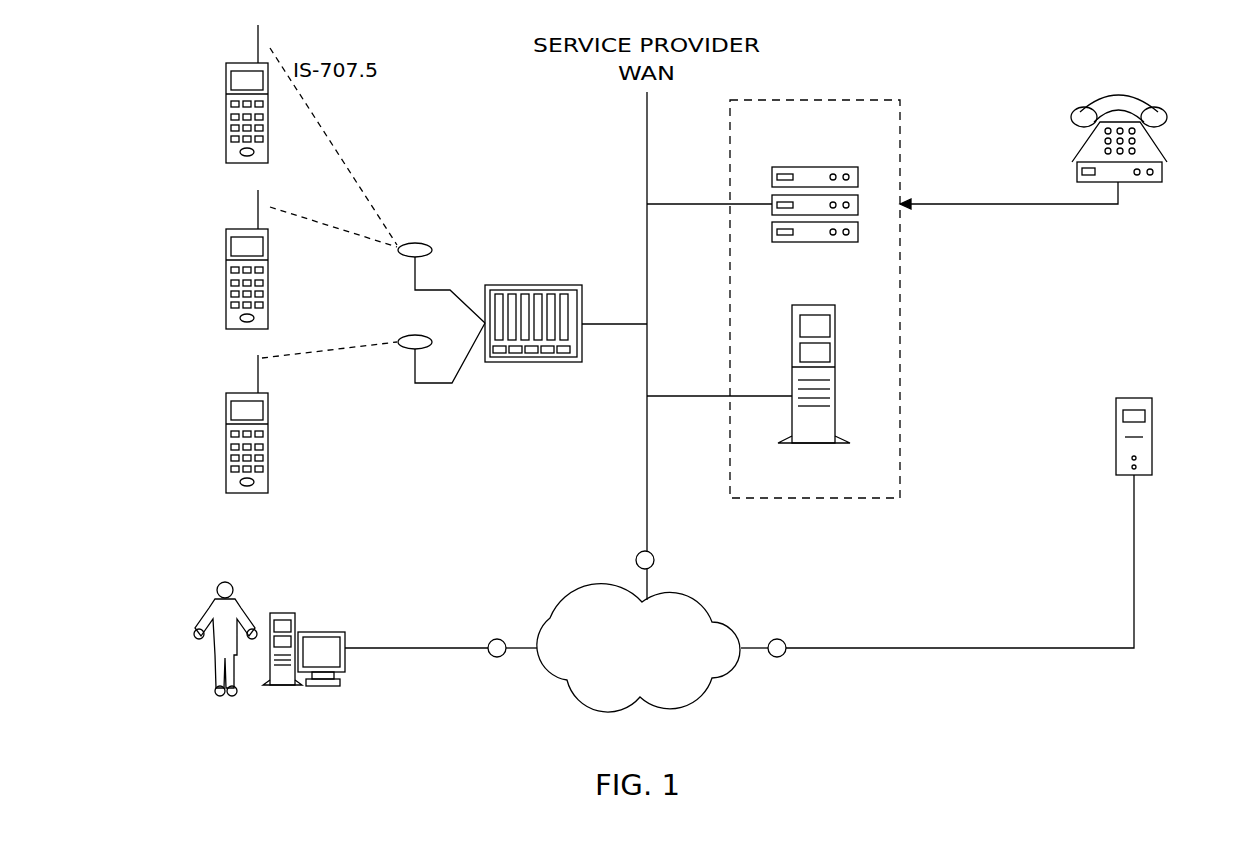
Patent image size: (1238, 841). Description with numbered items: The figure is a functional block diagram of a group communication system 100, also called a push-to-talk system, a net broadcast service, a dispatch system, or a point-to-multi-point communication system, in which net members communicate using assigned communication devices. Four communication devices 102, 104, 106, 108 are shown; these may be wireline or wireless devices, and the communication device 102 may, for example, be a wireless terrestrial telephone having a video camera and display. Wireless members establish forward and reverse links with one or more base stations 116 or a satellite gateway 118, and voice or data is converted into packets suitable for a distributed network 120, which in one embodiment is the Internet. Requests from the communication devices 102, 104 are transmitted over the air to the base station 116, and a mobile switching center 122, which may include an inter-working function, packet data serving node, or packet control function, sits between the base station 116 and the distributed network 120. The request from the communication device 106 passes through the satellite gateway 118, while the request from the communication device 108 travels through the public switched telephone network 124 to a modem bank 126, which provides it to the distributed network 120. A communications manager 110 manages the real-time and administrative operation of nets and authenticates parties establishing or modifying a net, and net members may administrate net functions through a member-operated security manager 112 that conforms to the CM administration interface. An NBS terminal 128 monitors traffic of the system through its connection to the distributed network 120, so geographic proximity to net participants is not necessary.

The group communication system 100 is at (68, 790).
The communication device 102 is at (241, 63).
The communication device 104 is at (241, 229).
The communication device 106 is at (241, 393).
The communication device 108 is at (1147, 183).
The communications manager 110 is at (806, 305).
The security manager 112 is at (1134, 398).
The base station 116 is at (416, 243).
The satellite gateway 118 is at (407, 350).
The distributed network 120 is at (698, 702).
The mobile switching center 122 is at (527, 285).
The public switched telephone network 124 is at (1020, 206).
The modem bank 126 is at (828, 243).
The NBS terminal 128 is at (282, 613).